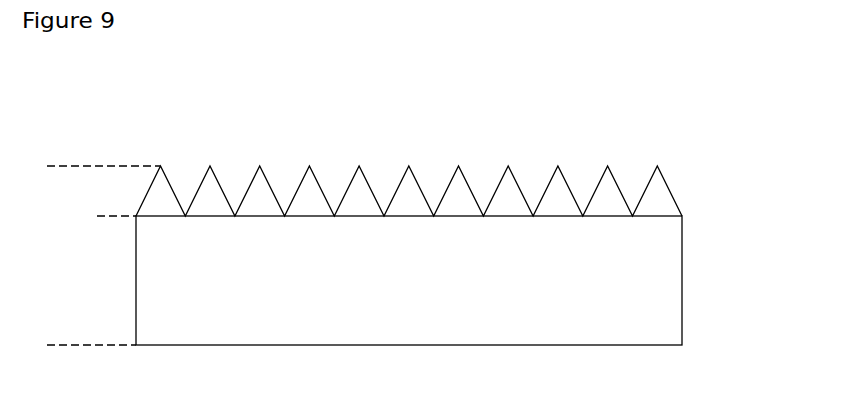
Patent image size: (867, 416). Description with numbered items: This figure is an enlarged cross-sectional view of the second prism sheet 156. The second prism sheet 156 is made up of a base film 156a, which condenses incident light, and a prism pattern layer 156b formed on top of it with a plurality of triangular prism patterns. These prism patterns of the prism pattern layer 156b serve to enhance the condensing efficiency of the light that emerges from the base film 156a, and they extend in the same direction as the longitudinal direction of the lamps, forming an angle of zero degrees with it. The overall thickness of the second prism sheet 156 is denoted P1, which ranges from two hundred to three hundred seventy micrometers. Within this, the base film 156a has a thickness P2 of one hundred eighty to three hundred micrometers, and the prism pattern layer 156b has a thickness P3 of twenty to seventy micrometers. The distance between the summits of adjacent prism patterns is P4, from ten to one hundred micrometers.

The second prism sheet 156 is at (474, 255).
The base film 156a is at (678, 280).
The prism pattern layer 156b is at (663, 194).
The thickness of the second prism sheet P1 is at (56, 166).
The thickness of the base film P2 is at (113, 216).
The thickness of the prism pattern layer P3 is at (113, 166).
The distance between summits of adjacent prism patterns P4 is at (408, 166).